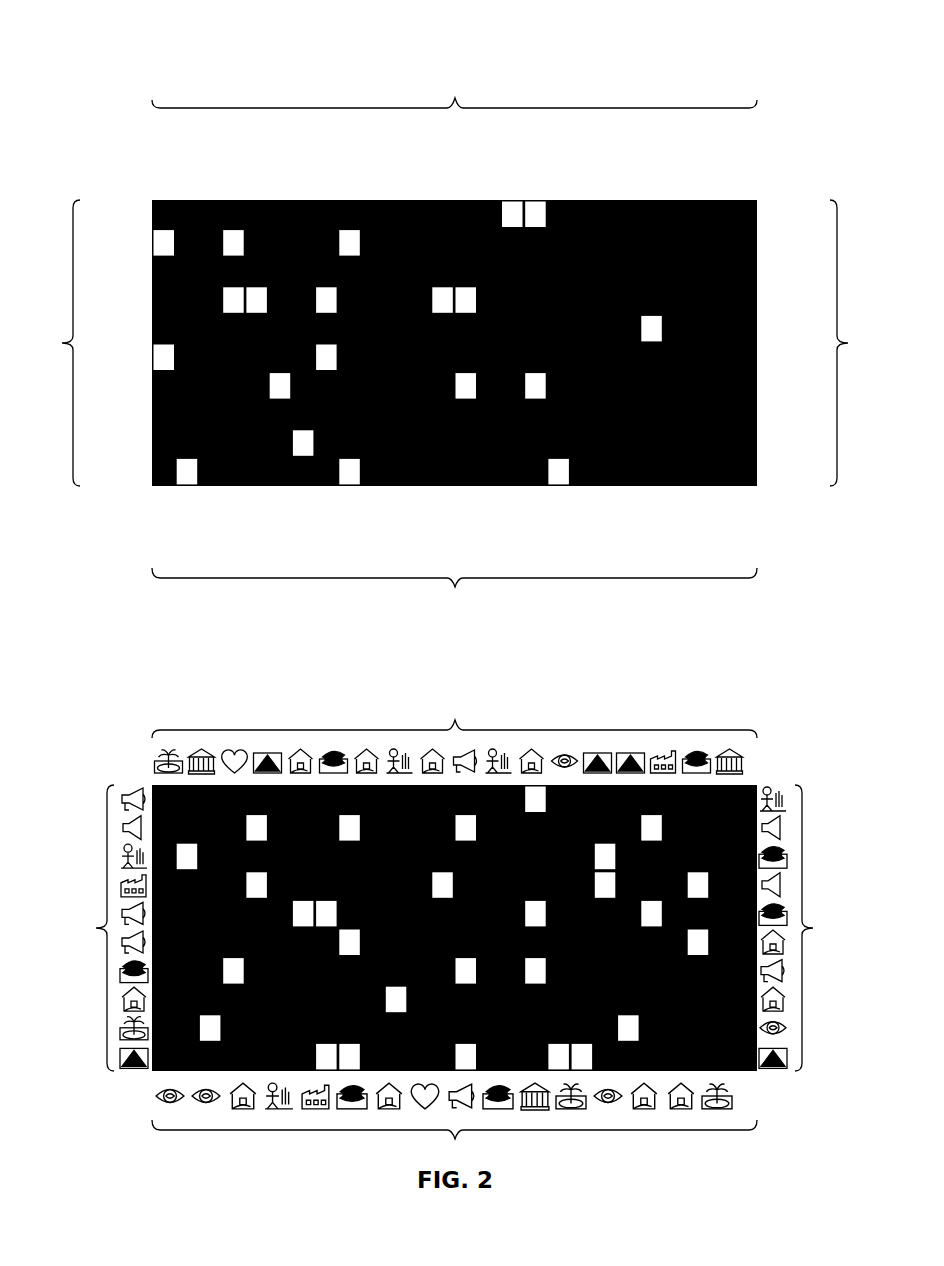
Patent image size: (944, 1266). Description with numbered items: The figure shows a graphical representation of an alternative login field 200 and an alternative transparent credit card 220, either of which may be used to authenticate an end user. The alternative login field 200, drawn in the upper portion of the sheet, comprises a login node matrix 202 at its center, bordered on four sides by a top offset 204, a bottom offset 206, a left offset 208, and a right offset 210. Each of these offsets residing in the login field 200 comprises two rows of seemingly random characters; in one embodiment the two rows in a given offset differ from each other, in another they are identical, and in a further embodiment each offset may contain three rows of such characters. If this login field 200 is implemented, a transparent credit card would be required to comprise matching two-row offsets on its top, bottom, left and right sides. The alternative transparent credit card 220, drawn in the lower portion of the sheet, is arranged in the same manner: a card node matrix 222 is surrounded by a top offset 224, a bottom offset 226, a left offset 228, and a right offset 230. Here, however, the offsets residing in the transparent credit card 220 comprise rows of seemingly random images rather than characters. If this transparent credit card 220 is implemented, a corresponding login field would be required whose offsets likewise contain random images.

The alternative login field 200 is at (348, 94).
The login node matrix 202 is at (756, 200).
The top offset 204 is at (454, 131).
The bottom offset 206 is at (454, 549).
The left offset 208 is at (87, 343).
The right offset 210 is at (824, 343).
The alternative transparent credit card 220 is at (348, 713).
The card node matrix 222 is at (756, 785).
The top offset 224 is at (454, 732).
The bottom offset 226 is at (454, 1122).
The left offset 228 is at (102, 928).
The right offset 230 is at (806, 928).